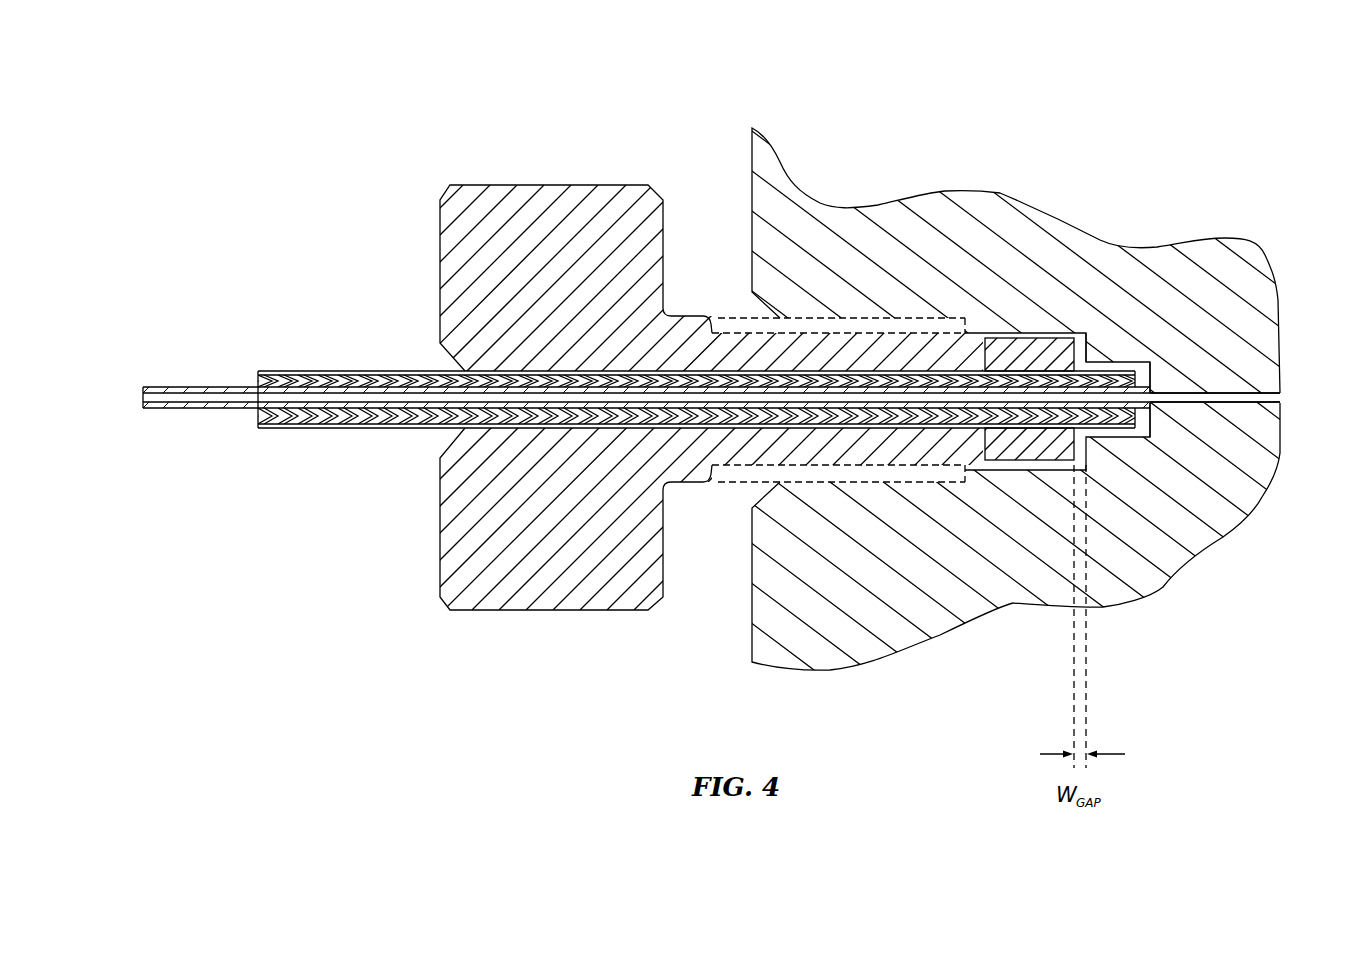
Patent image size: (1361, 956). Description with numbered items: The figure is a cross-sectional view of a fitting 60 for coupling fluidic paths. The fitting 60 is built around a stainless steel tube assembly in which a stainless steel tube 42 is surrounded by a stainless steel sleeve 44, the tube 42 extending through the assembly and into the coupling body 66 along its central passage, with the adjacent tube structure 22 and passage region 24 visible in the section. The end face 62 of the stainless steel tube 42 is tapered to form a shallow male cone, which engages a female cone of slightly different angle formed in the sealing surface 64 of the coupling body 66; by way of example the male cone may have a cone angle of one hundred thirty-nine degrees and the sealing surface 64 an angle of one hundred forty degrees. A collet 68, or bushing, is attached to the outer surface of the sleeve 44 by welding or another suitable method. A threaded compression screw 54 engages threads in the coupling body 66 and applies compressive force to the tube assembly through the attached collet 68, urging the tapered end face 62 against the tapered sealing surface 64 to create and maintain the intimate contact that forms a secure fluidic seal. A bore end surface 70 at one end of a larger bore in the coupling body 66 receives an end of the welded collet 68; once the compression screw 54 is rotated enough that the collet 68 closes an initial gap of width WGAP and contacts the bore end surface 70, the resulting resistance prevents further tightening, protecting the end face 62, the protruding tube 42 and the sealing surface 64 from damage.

The inner tubular member 22 is at (143, 398).
The lumen 24 is at (1270, 400).
The stainless steel tube 42 is at (237, 412).
The stainless steel sleeve 44 is at (405, 371).
The threaded compression screw 54 is at (440, 236).
The fitting 60 is at (670, 96).
The end face 62 is at (1141, 424).
The sealing surface 64 is at (1142, 371).
The coupling body 66 is at (972, 258).
The collet 68 is at (1022, 338).
The bore end surface 70 is at (1080, 333).